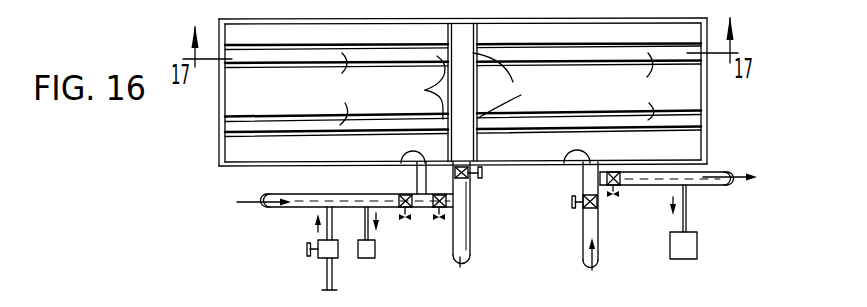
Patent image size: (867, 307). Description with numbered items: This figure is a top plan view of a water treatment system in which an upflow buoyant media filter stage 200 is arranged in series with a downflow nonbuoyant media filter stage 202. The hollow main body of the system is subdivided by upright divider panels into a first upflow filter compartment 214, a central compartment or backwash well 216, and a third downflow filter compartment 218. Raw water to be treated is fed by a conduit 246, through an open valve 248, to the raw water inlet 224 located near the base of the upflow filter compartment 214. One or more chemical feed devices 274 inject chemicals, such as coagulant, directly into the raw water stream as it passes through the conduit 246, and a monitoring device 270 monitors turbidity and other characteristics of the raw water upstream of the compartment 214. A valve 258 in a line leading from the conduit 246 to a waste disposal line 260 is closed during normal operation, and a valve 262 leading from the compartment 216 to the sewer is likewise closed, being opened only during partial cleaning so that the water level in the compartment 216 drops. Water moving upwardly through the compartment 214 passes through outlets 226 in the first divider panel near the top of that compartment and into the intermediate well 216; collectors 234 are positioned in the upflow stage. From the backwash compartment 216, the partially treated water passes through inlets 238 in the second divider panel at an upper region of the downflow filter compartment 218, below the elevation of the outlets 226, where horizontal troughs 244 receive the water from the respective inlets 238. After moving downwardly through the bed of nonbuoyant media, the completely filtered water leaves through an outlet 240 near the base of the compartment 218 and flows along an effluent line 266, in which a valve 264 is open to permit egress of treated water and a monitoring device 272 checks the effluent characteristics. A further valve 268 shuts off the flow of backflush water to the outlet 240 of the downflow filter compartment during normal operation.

The upflow buoyant media filter stage 200 is at (485, 119).
The downflow nonbuoyant media filter stage 202 is at (693, 141).
The upflow filter compartment 214 is at (306, 102).
The central compartment or backwash well 216 is at (466, 86).
The downflow filter compartment 218 is at (614, 102).
The raw water inlet 224 is at (414, 158).
The outlets 226 is at (419, 87).
The collectors 234 is at (350, 89).
The inlets 238 is at (513, 85).
The outlet 240 is at (565, 153).
The troughs 244 is at (656, 86).
The conduit 246 is at (300, 200).
The valve 248 is at (405, 222).
The valve 258 is at (440, 225).
The waste disposal line 260 is at (465, 228).
The valve 262 is at (468, 183).
The valve 264 is at (618, 192).
The effluent line 266 is at (707, 188).
The valve 268 is at (588, 215).
The monitoring device 270 is at (368, 258).
The monitoring device 272 is at (698, 245).
The chemical feed device 274 is at (327, 258).